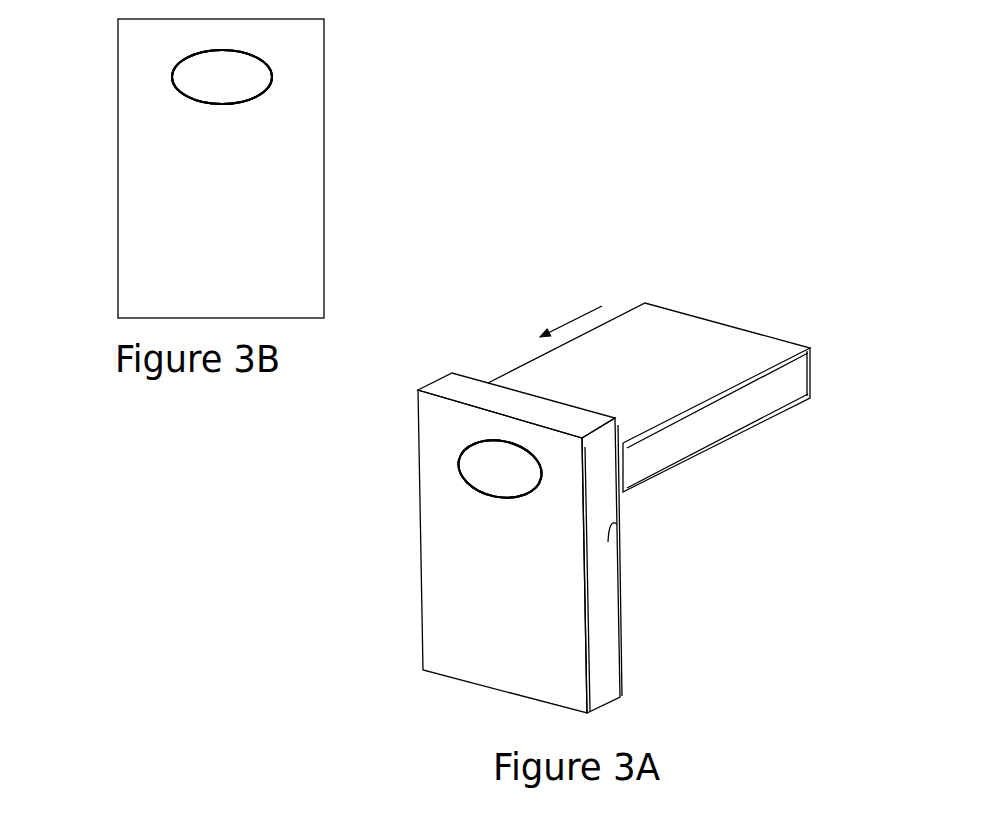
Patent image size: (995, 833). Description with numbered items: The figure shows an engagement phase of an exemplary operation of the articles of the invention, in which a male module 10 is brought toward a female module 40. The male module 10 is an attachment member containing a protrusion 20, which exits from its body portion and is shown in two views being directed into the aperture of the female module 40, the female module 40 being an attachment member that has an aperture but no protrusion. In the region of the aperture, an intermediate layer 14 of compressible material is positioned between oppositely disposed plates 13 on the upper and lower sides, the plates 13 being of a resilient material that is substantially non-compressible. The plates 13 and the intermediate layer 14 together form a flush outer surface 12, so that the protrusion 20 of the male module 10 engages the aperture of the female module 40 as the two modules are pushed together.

In FIG. 3A, the male module 10 is at (747, 463).
In FIG. 3A, the flush outer surface 12 is at (617, 524).
In FIG. 3B, the plates 13 is at (220, 50).
In FIG. 3A, the plates 13 is at (495, 443).
In FIG. 3B, the intermediate layer 14 is at (213, 77).
In FIG. 3A, the intermediate layer 14 is at (488, 473).
In FIG. 3B, the protrusion 20 is at (168, 88).
In FIG. 3A, the protrusion 20 is at (522, 500).
In FIG. 3B, the female module 40 is at (380, 152).
In FIG. 3A, the female module 40 is at (660, 615).